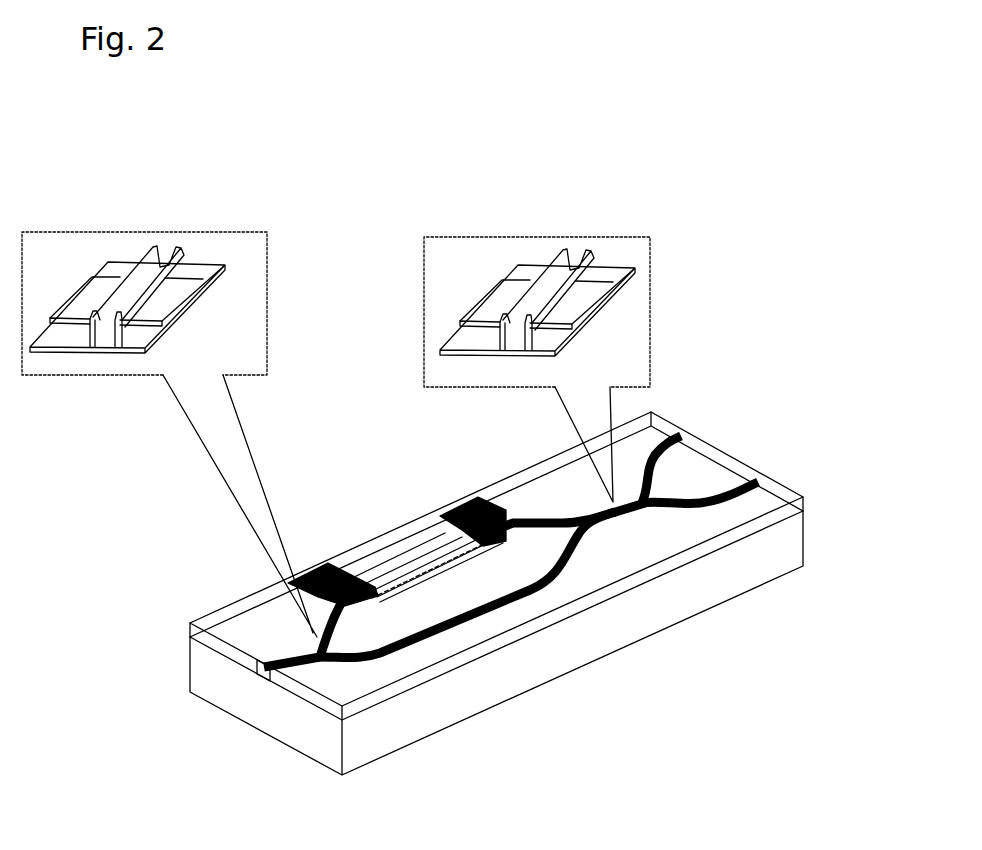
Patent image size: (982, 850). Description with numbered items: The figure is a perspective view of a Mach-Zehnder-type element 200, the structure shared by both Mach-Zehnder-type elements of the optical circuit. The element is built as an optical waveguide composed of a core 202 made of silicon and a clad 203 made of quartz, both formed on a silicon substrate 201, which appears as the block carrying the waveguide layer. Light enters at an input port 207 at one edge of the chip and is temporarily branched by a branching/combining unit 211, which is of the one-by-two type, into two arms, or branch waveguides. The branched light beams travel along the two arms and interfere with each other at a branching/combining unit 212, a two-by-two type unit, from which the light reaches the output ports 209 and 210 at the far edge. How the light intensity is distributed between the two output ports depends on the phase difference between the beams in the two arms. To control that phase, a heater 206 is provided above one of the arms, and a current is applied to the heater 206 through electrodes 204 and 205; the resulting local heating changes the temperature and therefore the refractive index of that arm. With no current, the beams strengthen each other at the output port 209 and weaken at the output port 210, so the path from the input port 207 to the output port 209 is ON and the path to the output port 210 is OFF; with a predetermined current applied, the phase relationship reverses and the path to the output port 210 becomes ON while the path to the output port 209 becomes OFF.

The Mach-Zehnder-type element 200 is at (702, 252).
The silicon substrate 201 is at (488, 688).
The core 202 is at (532, 602).
The clad 203 is at (598, 570).
The electrode 204 is at (321, 575).
The electrode 205 is at (465, 500).
The heater 206 is at (413, 562).
The input port 207 is at (260, 676).
The output port 209 is at (683, 422).
The output port 210 is at (757, 480).
The branching/combining unit 211 is at (360, 663).
The branching/combining unit 212 is at (647, 512).